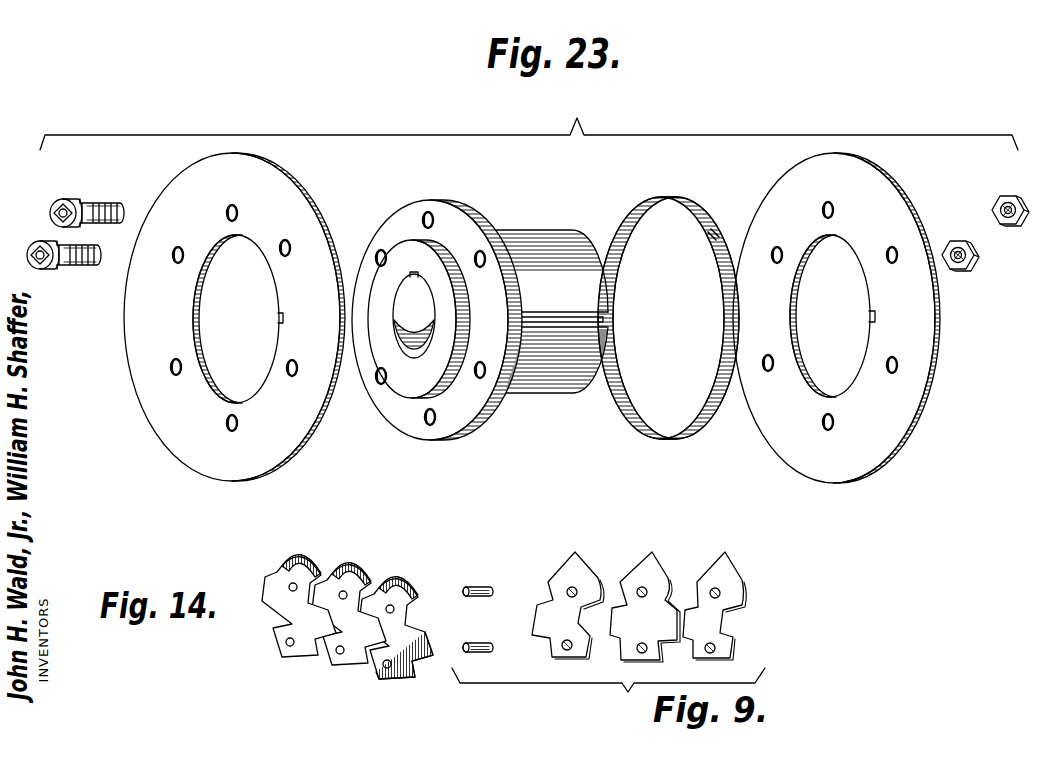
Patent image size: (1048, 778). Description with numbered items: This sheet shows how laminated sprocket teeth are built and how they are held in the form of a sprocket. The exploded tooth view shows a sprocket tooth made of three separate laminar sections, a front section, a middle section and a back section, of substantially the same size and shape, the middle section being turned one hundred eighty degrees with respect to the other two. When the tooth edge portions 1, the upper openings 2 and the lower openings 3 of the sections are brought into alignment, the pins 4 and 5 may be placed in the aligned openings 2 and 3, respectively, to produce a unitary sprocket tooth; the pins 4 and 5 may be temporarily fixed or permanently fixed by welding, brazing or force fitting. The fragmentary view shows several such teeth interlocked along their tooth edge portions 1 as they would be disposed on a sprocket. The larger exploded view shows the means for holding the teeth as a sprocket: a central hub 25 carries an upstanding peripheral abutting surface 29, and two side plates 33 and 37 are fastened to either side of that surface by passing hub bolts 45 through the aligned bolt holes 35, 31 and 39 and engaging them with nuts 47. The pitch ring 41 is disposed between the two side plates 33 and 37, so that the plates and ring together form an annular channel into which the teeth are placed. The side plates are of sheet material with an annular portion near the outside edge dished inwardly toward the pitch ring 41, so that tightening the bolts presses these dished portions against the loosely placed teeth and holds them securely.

In FIG. 14, the tooth edge portions 1 is at (302, 546).
In FIG. 9, the tooth edge portions 1 is at (577, 551).
In FIG. 9, the upper openings 2 is at (568, 590).
In FIG. 9, the lower openings 3 is at (568, 650).
In FIG. 9, the pin 4 is at (478, 586).
In FIG. 9, the pin 5 is at (478, 642).
In FIG. 23, the central hub 25 is at (379, 384).
In FIG. 23, the upstanding peripheral abutting surface 29 is at (473, 400).
In FIG. 23, the bolt holes 31 is at (430, 428).
In FIG. 23, the side plate 33 is at (259, 457).
In FIG. 23, the bolt holes 35 is at (225, 421).
In FIG. 23, the side plate 37 is at (850, 461).
In FIG. 23, the bolt holes 39 is at (822, 420).
In FIG. 23, the pitch ring 41 is at (645, 439).
In FIG. 23, the hub bolts 45 is at (46, 242).
In FIG. 23, the nuts 47 is at (985, 233).